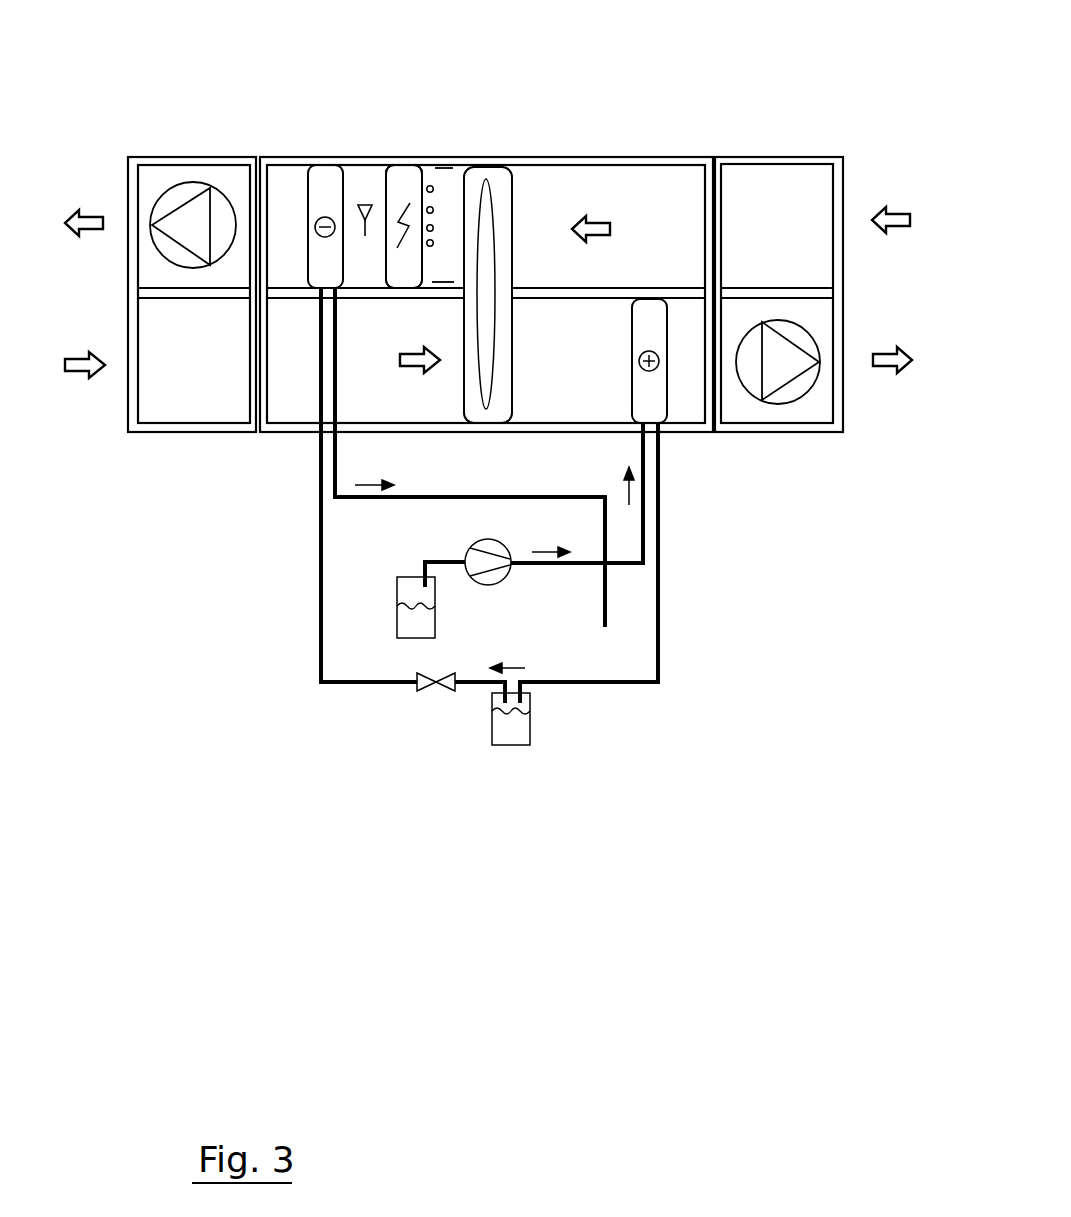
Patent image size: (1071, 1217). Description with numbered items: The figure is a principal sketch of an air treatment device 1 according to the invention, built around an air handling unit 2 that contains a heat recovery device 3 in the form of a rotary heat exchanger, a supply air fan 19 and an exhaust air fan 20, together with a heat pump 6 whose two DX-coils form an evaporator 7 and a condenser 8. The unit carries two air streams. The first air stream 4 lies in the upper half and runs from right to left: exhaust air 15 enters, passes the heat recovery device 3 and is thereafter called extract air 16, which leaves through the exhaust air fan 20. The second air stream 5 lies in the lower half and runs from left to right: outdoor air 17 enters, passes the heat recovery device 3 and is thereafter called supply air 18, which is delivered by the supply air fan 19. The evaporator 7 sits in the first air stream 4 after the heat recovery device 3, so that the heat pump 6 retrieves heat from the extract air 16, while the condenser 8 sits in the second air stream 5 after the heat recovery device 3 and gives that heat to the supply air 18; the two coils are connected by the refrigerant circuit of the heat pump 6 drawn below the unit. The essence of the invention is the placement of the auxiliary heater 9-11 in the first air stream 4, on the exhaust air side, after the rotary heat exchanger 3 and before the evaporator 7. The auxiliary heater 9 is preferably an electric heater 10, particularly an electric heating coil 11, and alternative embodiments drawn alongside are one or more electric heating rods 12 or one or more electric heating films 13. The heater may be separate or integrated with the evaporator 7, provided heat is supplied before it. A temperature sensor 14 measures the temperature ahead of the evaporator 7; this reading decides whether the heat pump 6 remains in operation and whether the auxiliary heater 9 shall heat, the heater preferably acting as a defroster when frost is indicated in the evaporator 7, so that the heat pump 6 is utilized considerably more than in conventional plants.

The air treatment device 1 is at (727, 103).
The air handling unit 2 is at (838, 157).
The heat recovery device 3 is at (498, 178).
The first air stream 4 is at (607, 228).
The second air stream 5 is at (406, 363).
The heat pump 6 is at (282, 680).
The evaporator 7 is at (325, 178).
The condenser 8 is at (657, 408).
The auxiliary heater, electric heater, electric heating coil 9-11 is at (391, 147).
The auxiliary heater 9 is at (404, 226).
The electric heater 10 is at (403, 225).
The electric heating coil 11 is at (402, 177).
The electric heating rods 12 is at (432, 178).
The electric heating films 13 is at (443, 168).
The temperature sensor 14 is at (364, 203).
The exhaust air 15 is at (911, 219).
The extract air 16 is at (67, 224).
The outdoor air 17 is at (68, 366).
The supply air 18 is at (912, 359).
The supply air fan 19 is at (802, 387).
The exhaust air fan 20 is at (190, 188).